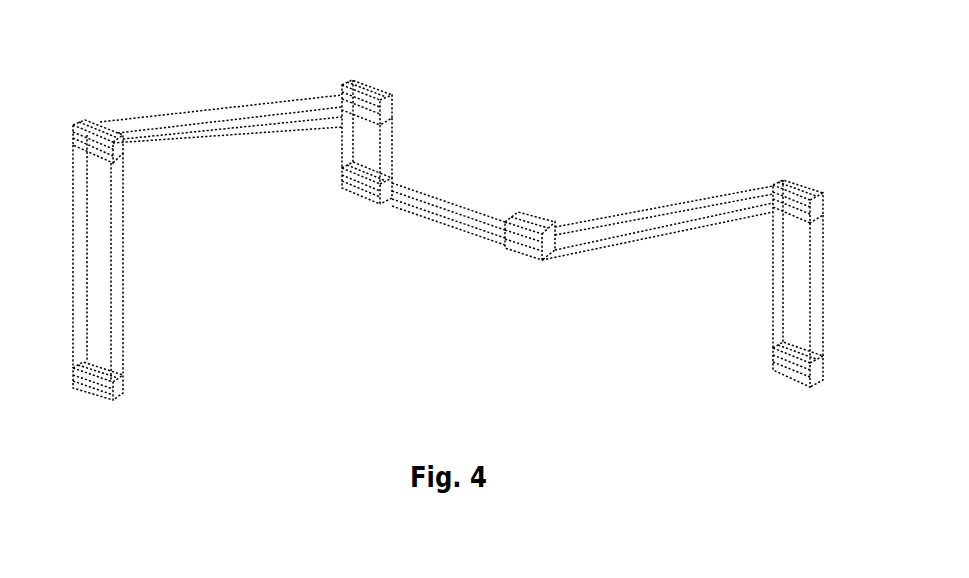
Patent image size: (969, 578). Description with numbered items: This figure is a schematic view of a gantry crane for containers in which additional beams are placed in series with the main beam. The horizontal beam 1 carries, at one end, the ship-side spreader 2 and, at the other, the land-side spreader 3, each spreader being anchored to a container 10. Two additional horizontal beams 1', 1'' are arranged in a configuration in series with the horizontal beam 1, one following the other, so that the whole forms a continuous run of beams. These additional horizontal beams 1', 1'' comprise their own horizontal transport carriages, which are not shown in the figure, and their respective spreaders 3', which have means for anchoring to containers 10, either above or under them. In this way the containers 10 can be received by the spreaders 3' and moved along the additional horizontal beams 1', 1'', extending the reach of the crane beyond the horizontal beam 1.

The horizontal beam 1 is at (221, 78).
The additional horizontal beam 1' is at (450, 178).
The additional horizontal beam 1'' is at (657, 186).
The ship-side spreader 2 is at (132, 287).
The land-side spreader 3 is at (394, 132).
The spreader 3' is at (743, 271).
The container 10 is at (132, 387).